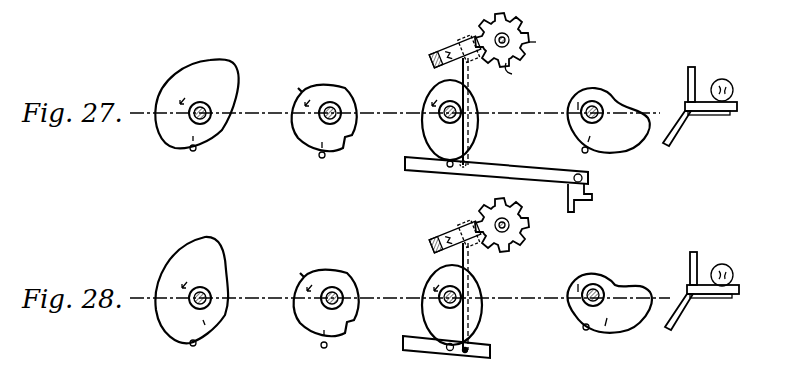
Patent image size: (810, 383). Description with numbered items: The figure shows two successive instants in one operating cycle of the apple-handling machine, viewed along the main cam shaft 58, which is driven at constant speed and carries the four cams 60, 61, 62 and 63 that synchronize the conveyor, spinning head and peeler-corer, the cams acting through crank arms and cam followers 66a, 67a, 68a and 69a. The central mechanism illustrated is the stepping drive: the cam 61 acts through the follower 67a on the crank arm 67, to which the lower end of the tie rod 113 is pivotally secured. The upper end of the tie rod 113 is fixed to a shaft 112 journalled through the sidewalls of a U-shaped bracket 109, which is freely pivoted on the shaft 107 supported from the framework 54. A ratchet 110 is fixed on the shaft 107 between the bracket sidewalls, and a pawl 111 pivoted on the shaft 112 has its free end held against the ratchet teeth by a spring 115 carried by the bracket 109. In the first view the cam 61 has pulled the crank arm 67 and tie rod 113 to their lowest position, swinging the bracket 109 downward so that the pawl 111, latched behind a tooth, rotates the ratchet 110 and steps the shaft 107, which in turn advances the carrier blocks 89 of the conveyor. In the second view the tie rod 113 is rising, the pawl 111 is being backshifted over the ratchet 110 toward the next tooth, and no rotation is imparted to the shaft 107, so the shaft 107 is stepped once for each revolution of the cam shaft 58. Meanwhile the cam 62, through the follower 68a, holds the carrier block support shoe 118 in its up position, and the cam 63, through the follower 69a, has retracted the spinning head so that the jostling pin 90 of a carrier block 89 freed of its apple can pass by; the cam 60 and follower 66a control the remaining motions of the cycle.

In FIG. 27, the framework 54 is at (581, 200).
In FIG. 27, the cam shaft 58 is at (207, 119).
In FIG. 28, the cam shaft 58 is at (208, 305).
In FIG. 27, the cam 60 is at (628, 124).
In FIG. 28, the cam 60 is at (633, 285).
In FIG. 27, the cam 61 is at (428, 136).
In FIG. 28, the cam 61 is at (432, 322).
In FIG. 27, the cam 62 is at (335, 93).
In FIG. 28, the cam 62 is at (332, 280).
In FIG. 27, the cam 63 is at (200, 72).
In FIG. 28, the cam 63 is at (216, 252).
In FIG. 27, the cam follower 66a is at (587, 153).
In FIG. 27, the crank arm 67 is at (502, 166).
In FIG. 28, the crank arm 67 is at (415, 350).
In FIG. 27, the cam follower 67a is at (453, 168).
In FIG. 27, the cam follower 68a is at (322, 159).
In FIG. 27, the cam follower 69a is at (194, 152).
In FIG. 27, the carrier block 89 is at (740, 108).
In FIG. 28, the carrier block 89 is at (742, 290).
In FIG. 27, the jostling pin 90 is at (697, 72).
In FIG. 28, the jostling pin 90 is at (722, 275).
In FIG. 27, the shaft 107 is at (497, 36).
In FIG. 28, the shaft 107 is at (502, 225).
In FIG. 27, the U-shaped bracket 109 is at (432, 58).
In FIG. 27, the ratchet 110 is at (547, 43).
In FIG. 27, the pawl 111 is at (521, 73).
In FIG. 27, the shaft 112 is at (460, 40).
In FIG. 27, the tie rod 113 is at (460, 74).
In FIG. 28, the tie rod 113 is at (470, 266).
In FIG. 27, the spring 115 is at (445, 44).
In FIG. 28, the spring 115 is at (446, 230).
In FIG. 27, the shoe 118 is at (702, 118).
In FIG. 28, the shoe 118 is at (705, 300).